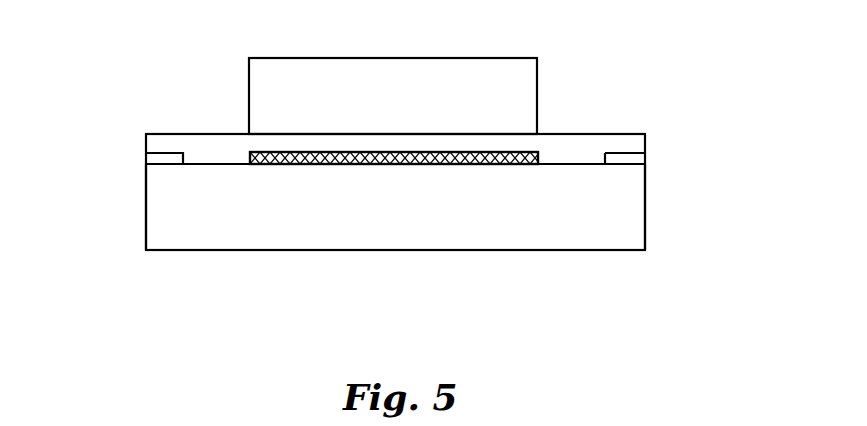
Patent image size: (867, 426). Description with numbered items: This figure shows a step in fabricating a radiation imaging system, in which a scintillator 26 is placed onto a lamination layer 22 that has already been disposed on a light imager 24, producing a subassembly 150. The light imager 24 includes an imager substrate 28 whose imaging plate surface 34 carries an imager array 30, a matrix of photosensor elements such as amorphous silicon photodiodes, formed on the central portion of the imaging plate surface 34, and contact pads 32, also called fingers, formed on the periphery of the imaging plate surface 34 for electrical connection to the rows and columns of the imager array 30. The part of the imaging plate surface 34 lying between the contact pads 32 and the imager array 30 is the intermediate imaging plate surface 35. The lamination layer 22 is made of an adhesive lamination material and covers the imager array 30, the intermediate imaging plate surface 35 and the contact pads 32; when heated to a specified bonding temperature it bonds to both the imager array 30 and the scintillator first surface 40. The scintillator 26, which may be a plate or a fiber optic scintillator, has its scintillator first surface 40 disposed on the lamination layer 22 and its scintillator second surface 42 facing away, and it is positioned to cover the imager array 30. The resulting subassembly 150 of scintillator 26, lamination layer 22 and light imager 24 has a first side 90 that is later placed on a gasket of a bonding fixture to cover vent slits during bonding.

The lamination layer 22 is at (600, 150).
The light imager 24 is at (413, 231).
The scintillator 26 is at (413, 110).
The imager substrate 28 is at (633, 217).
The imager array 30 is at (340, 164).
The contact pads 32 is at (153, 157).
The imaging plate surface 34 is at (210, 165).
The intermediate imaging plate surface 35 is at (250, 168).
The scintillator first surface 40 is at (527, 134).
The scintillator second surface 42 is at (322, 58).
The first side of subassembly 90 is at (218, 253).
The subassembly 150 is at (697, 257).